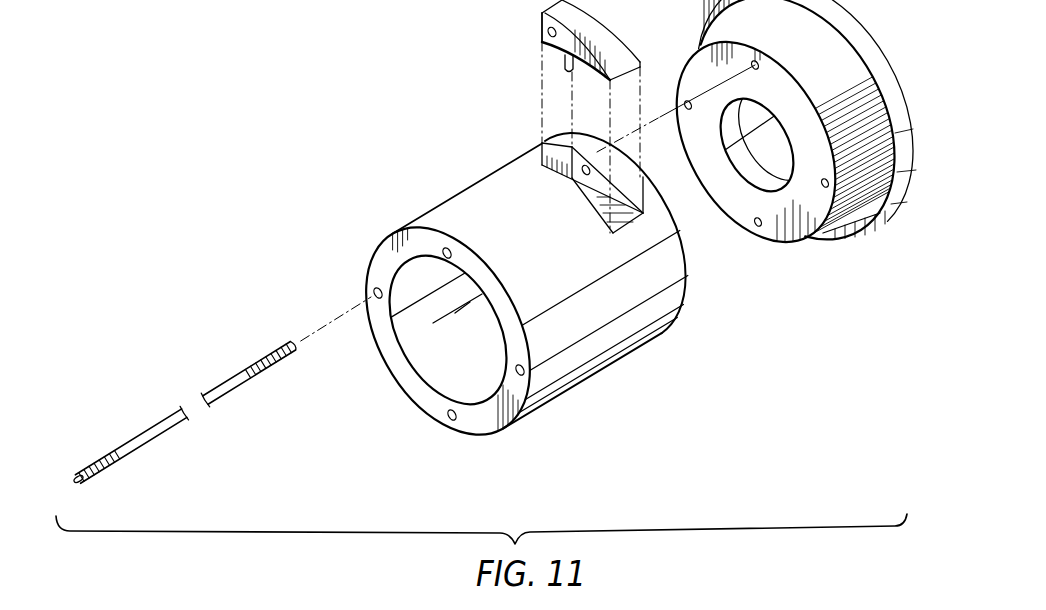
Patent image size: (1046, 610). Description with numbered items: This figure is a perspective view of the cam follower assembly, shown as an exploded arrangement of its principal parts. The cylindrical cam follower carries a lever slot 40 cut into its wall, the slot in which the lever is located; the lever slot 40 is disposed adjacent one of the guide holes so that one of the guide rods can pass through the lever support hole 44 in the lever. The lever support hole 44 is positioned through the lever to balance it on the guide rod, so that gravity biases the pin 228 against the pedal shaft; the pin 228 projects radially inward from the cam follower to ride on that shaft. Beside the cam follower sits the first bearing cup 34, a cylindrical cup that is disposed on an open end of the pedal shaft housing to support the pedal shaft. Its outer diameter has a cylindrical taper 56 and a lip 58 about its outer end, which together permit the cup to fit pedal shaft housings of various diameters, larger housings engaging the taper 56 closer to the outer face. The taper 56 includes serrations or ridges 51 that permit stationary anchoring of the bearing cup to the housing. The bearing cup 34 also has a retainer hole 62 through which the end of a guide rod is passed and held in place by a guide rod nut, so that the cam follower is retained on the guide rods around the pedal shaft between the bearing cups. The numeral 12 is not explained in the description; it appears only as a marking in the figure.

The section line of FIG. 12 is at (577, 125).
The first bearing cup 34 is at (797, 147).
The lever slot 40 is at (555, 158).
The lever support hole 44 is at (548, 30).
The serrations or ridges 51 is at (845, 87).
The cylindrical taper 56 is at (842, 218).
The lip 58 is at (900, 113).
The retainer hole 62 is at (765, 232).
The pin 228 is at (565, 62).